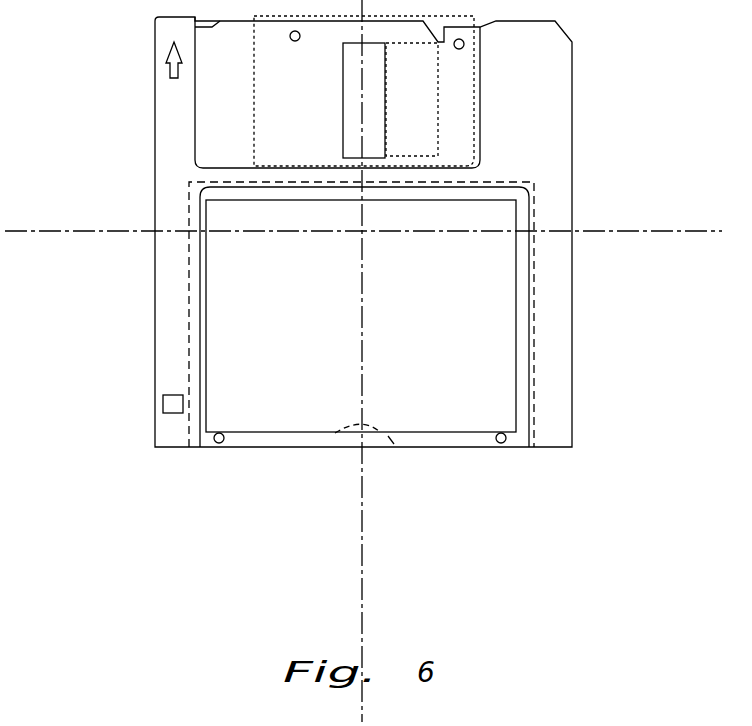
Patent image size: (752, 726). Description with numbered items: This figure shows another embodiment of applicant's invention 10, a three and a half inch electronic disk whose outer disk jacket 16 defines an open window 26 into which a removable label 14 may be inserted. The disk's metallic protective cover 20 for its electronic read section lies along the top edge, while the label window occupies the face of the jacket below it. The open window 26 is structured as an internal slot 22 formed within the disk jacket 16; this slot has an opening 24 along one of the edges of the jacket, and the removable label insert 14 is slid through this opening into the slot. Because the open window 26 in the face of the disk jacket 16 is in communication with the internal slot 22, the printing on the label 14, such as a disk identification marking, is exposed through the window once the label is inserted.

The invention 10 is at (186, 352).
The removable label 14 is at (492, 292).
The outer disk jacket 16 is at (183, 177).
The metallic protective cover 20 is at (254, 130).
The internal slot 22 is at (533, 396).
The opening 24 is at (355, 437).
The open window 26 is at (477, 278).